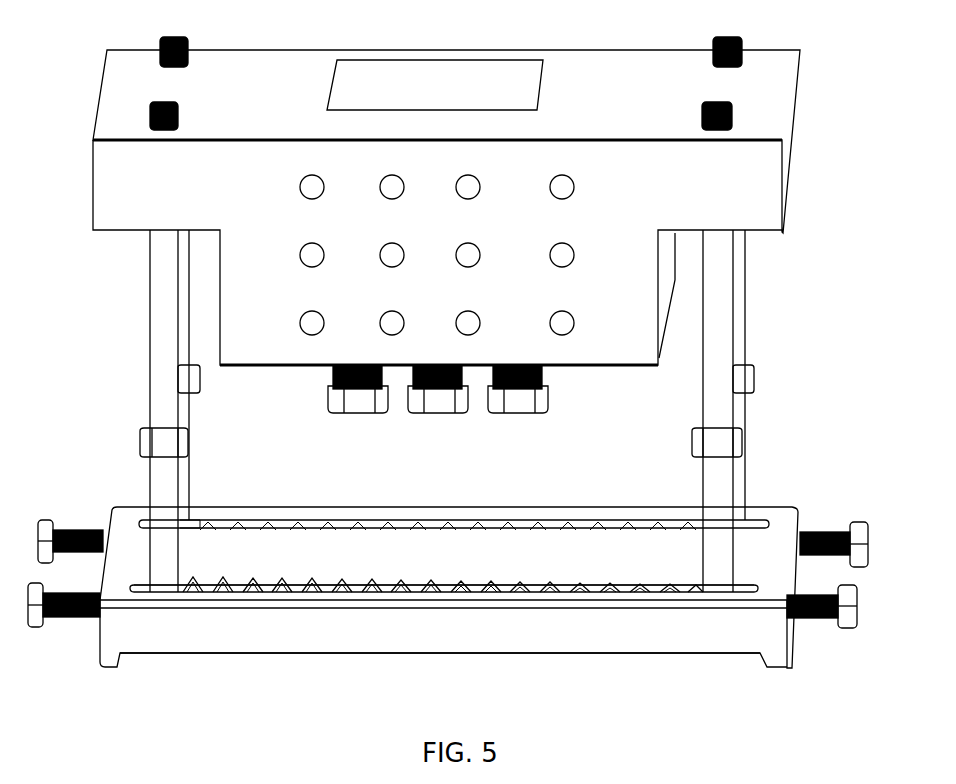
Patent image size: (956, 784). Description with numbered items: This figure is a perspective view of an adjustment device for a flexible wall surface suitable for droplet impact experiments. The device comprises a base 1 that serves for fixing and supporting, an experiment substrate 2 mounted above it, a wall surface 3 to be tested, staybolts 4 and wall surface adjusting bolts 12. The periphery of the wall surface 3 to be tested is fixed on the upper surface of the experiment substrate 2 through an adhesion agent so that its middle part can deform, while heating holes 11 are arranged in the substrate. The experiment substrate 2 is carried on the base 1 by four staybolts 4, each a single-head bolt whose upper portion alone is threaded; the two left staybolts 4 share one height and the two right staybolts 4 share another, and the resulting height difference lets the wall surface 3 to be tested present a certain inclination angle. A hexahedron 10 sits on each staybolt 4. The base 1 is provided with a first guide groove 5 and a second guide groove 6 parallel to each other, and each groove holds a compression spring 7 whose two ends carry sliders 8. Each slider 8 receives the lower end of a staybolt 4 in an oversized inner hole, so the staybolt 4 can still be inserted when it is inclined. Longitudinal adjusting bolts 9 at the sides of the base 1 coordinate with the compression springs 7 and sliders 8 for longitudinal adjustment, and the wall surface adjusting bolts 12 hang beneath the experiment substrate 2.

The base 1 is at (350, 642).
The experiment substrate 2 is at (578, 85).
The wall surface to be tested 3 is at (380, 78).
The staybolt 4 is at (188, 323).
The first guide groove 5 is at (652, 595).
The second guide groove 6 is at (473, 530).
The compression spring 7 is at (550, 587).
The slider 8 is at (192, 522).
The longitudinal adjusting bolt 9 is at (76, 527).
The hexahedron 10 is at (142, 437).
The heating hole 11 is at (563, 326).
The wall surface adjusting bolt 12 is at (437, 402).